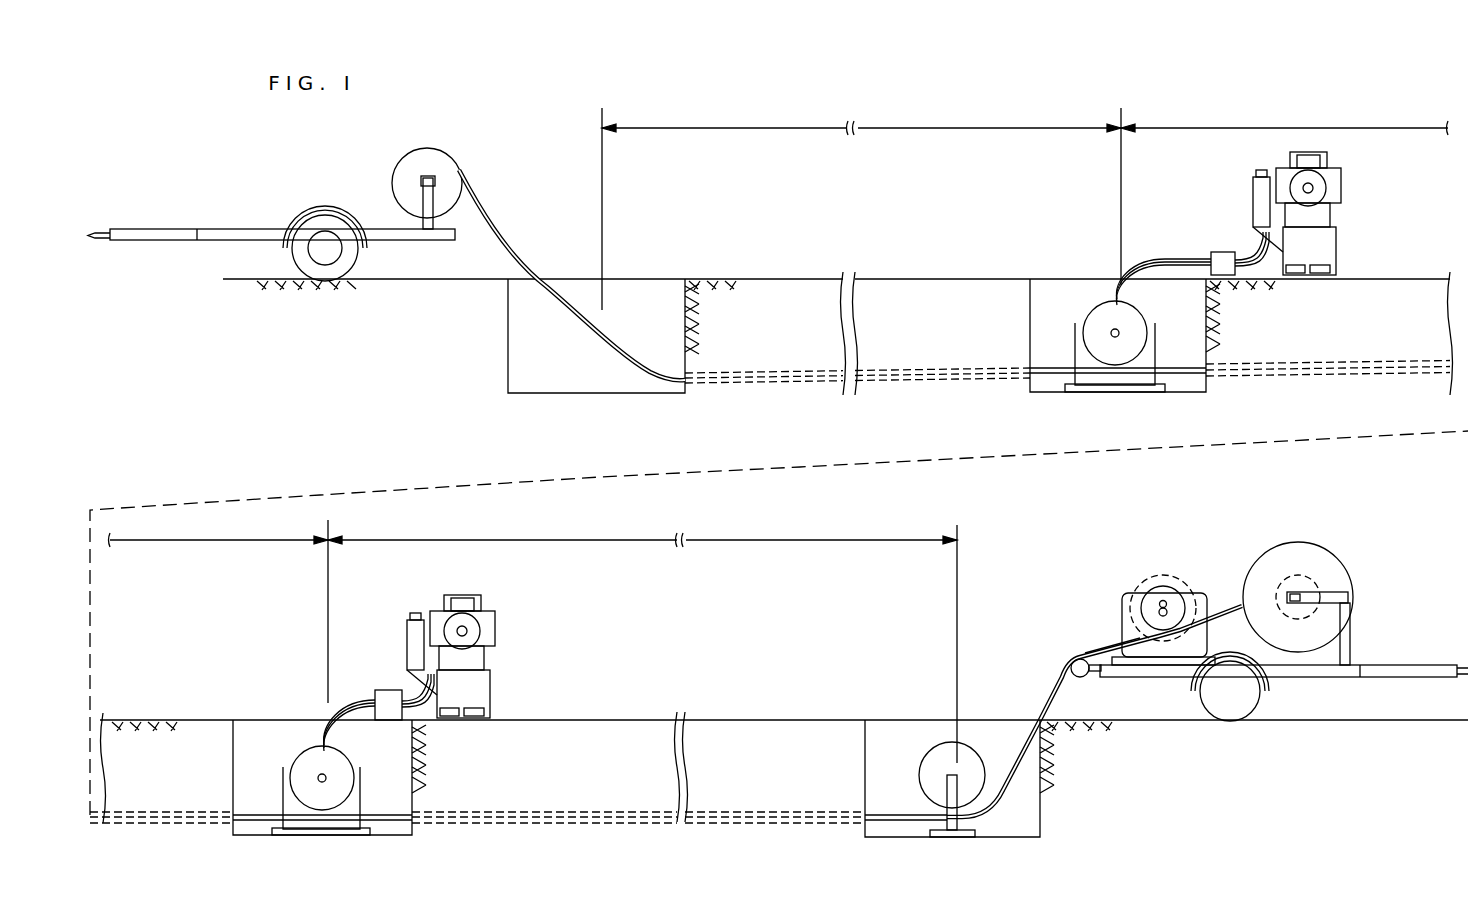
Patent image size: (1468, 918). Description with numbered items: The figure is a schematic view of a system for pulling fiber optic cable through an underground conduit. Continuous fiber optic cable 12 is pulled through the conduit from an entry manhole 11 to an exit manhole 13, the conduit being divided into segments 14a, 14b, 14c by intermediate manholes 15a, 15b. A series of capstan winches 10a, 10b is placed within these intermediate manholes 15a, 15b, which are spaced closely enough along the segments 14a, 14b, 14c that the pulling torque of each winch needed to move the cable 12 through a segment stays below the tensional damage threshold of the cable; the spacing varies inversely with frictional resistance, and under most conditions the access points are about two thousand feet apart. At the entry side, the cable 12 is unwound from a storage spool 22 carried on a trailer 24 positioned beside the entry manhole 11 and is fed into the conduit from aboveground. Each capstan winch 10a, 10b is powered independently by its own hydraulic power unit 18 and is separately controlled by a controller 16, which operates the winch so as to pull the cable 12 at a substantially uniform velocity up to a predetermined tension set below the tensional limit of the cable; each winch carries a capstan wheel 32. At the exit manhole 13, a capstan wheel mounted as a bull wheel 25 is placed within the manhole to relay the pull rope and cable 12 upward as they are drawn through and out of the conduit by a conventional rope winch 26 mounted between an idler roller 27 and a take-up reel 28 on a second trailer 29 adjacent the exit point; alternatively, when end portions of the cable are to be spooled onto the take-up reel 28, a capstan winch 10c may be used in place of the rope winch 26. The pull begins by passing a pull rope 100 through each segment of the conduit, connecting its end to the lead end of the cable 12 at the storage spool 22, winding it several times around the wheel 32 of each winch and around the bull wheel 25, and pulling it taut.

The capstan winch 10a is at (1114, 317).
The capstan winch 10b is at (281, 770).
The capstan winch 10c is at (1152, 583).
The entry manhole 11 is at (648, 293).
The fiber optic cable 12 is at (503, 246).
The exit manhole 13 is at (908, 740).
The conduit segment 14a is at (884, 370).
The conduit segment 14b is at (1350, 365).
The conduit segment 14c is at (527, 815).
The intermediate manhole 15a is at (1043, 300).
The intermediate manhole 15b is at (288, 733).
The controller 16 is at (1225, 257).
The hydraulic power unit 18 is at (1336, 240).
The storage spool 22 is at (425, 148).
The trailer 24 is at (240, 228).
The bull wheel 25 is at (975, 773).
The rope winch 26 is at (1175, 595).
The idler roller 27 is at (1085, 678).
The take-up reel 28 is at (1330, 548).
The second trailer 29 is at (1407, 663).
The capstan wheel 32 is at (1130, 315).
The pull rope 100 is at (1100, 648).